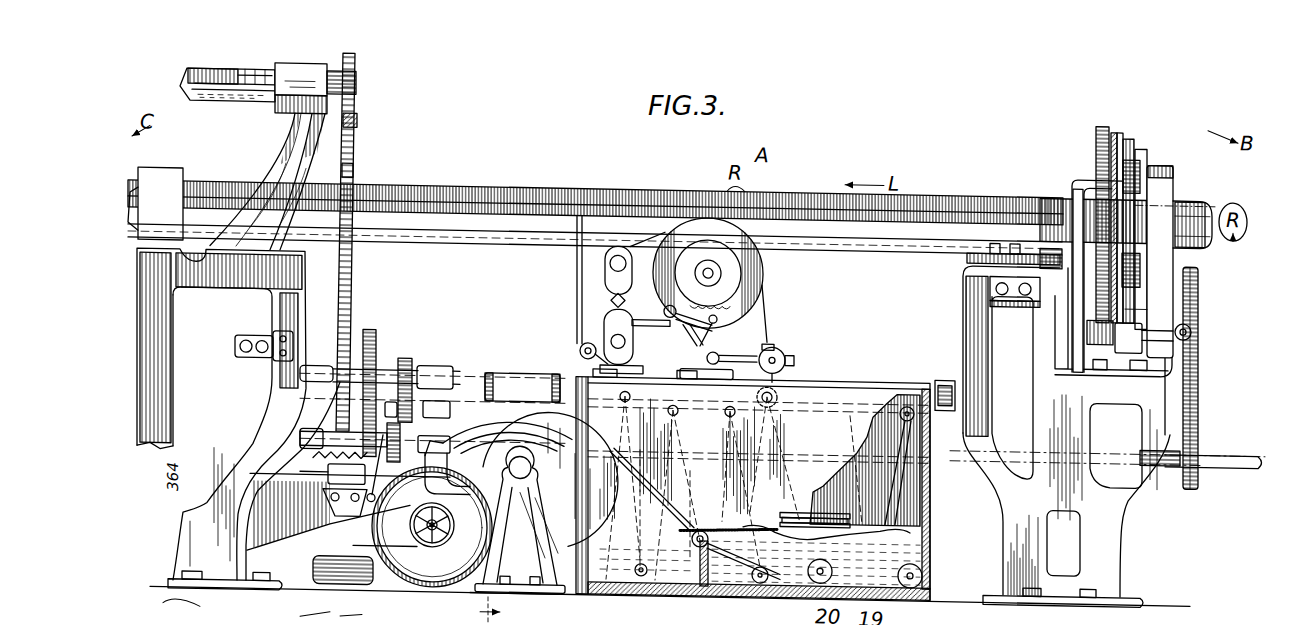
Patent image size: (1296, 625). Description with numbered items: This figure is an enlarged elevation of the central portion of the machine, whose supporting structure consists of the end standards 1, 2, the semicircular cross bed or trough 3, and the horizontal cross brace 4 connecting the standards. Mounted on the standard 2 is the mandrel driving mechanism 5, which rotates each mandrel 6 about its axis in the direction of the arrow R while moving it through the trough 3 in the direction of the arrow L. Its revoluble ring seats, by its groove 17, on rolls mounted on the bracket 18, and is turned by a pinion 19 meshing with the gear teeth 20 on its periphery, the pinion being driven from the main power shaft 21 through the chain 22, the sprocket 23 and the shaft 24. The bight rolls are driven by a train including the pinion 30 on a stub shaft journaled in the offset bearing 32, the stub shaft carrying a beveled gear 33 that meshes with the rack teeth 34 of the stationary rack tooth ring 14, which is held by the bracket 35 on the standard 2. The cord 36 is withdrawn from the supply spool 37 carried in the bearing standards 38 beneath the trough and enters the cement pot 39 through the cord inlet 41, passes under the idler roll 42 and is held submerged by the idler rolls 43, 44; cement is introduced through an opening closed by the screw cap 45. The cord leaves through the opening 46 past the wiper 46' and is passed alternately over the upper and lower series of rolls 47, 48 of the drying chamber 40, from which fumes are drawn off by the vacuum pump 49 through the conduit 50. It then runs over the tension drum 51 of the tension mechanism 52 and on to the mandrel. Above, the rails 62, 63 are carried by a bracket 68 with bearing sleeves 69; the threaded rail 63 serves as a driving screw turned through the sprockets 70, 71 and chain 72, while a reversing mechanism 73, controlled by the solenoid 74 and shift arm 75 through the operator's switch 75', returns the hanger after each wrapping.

The end standard 1 is at (265, 436).
The end standard 2 is at (975, 316).
The semicircular cross bed or trough 3 is at (493, 225).
The horizontal cross brace 4 is at (506, 379).
The mandrel driving mechanism 5 is at (1202, 166).
The mandrel or mandrel section 6 is at (634, 200).
The stationary rack tooth ring 14 is at (1165, 199).
The groove 17 is at (1058, 303).
The bracket 18 is at (1071, 184).
The pinion 19 is at (1093, 338).
The gear teeth 20 is at (1102, 117).
The main power shaft 21 is at (1243, 445).
The chain 22 is at (1198, 396).
The sprocket 23 is at (1198, 322).
The shaft 24 is at (1150, 340).
The pinion 30 is at (496, 607).
The offset bearing 32 is at (520, 597).
The beveled gear 33 is at (524, 530).
The rack teeth 34 is at (1147, 153).
The bracket 35 is at (1167, 290).
The cord 36 is at (576, 277).
The supply spool 37 is at (550, 479).
The bearing standard 38 is at (545, 525).
The cement pot 39 is at (753, 497).
The drying chamber 40 is at (843, 375).
The cord inlet 41 is at (652, 489).
The idler roll 42 is at (708, 531).
The idler roll 43 is at (816, 575).
The idler roll 44 is at (922, 571).
The screw cap 45 is at (790, 515).
The opening 46 is at (850, 473).
The wiper 46' is at (927, 476).
The upper horizontal series of rolls 47 is at (916, 412).
The lower horizontal series of rolls 48 is at (672, 577).
The vacuum pump 49 is at (432, 527).
The conduit 50 is at (498, 436).
The tension drum or roll 51 is at (763, 269).
The tension mechanism 52 is at (774, 290).
The rail 62 is at (243, 110).
The rail 63 is at (212, 110).
The bracket 68 is at (360, 156).
The bearing sleeve 69 is at (318, 80).
The sprocket 70 is at (350, 351).
The sprocket 71 is at (358, 123).
The chain 72 is at (354, 178).
The reversing mechanism 73 is at (407, 356).
The solenoid 74 is at (350, 475).
The shift arm 75 is at (385, 466).
The switch 75' is at (260, 350).